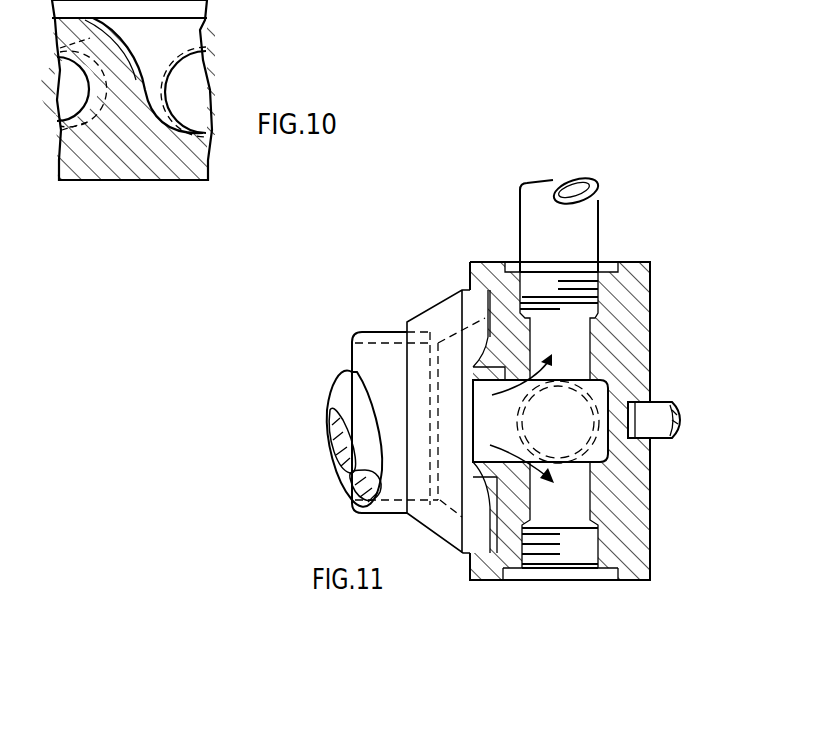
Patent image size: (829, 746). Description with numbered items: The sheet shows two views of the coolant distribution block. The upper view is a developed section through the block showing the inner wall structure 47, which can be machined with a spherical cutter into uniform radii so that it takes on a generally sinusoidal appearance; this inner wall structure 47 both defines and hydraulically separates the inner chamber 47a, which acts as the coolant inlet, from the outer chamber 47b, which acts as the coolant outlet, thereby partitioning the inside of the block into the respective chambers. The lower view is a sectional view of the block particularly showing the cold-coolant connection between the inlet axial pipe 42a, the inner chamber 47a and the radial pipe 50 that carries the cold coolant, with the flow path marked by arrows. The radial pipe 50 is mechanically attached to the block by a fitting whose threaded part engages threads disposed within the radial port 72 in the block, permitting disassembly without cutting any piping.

In FIG. 10, the inner wall structure 47 is at (117, 50).
In FIG. 10, the inner chamber 47a is at (72, 78).
In FIG. 11, the inner chamber 47a is at (608, 400).
In FIG. 10, the outer chamber 47b is at (195, 30).
In FIG. 11, the radial pipe 50 is at (590, 220).
In FIG. 11, the inlet axial pipe 42a is at (345, 370).
In FIG. 11, the radial port 72 is at (598, 560).